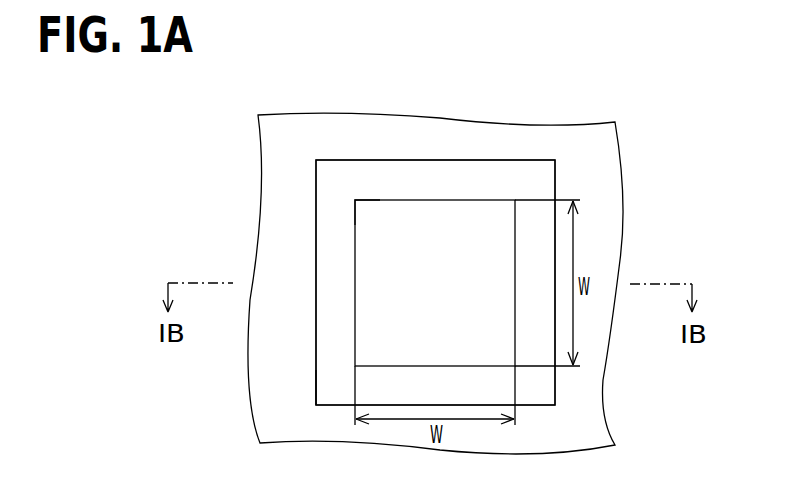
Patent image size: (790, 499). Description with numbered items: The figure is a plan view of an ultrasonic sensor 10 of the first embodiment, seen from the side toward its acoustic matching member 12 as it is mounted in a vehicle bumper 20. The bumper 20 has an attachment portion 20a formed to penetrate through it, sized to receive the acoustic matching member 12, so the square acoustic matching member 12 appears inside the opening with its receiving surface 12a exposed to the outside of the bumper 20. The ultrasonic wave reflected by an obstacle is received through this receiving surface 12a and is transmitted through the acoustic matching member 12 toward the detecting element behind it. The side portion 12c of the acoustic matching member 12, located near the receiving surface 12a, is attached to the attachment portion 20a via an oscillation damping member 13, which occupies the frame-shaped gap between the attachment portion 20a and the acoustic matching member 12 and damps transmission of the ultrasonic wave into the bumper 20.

The ultrasonic sensor 10 is at (560, 100).
The bumper 20 is at (457, 147).
The attachment portion 20a is at (317, 382).
The acoustic matching member 12 is at (431, 209).
The receiving surface 12a is at (383, 215).
The side portion 12c is at (354, 214).
The oscillation damping member 13 is at (530, 395).